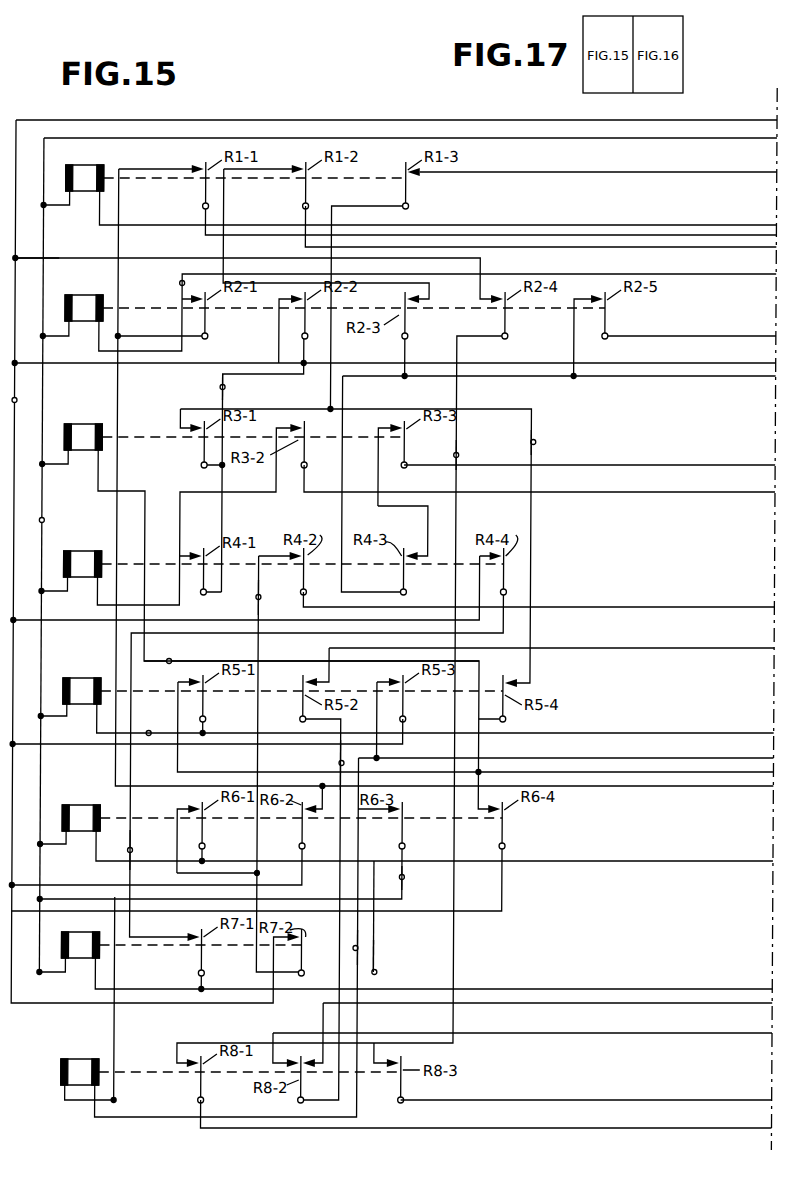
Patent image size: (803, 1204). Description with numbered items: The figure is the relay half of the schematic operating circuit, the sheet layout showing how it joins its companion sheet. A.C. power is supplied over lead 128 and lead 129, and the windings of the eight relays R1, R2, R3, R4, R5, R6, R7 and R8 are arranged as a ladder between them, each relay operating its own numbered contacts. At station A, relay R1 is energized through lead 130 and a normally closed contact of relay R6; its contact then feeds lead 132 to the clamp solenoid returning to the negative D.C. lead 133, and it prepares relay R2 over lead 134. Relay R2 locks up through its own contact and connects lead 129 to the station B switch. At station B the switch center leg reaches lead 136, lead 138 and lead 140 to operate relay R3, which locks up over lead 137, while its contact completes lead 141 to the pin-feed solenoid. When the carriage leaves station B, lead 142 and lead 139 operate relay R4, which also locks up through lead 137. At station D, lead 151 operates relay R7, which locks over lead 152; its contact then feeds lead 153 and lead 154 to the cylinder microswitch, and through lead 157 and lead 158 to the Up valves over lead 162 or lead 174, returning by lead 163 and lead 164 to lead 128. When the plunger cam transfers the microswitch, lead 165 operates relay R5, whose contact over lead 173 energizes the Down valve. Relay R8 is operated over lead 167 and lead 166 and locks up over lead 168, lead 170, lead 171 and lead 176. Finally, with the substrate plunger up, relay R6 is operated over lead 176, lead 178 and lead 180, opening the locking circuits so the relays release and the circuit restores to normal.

The A.C. lead 128 is at (560, 139).
The A.C. lead 129 is at (538, 120).
The lead 130 is at (628, 786).
The lead 132 is at (565, 248).
The negative D.C. lead 133 is at (720, 376).
The lead 134 is at (700, 275).
The lead 136 is at (690, 172).
The lead 137 is at (224, 387).
The lead 138 is at (535, 442).
The lead 139 is at (625, 493).
The lead 140 is at (172, 661).
The lead 141 is at (643, 465).
The lead 142 is at (643, 363).
The lead 151 is at (543, 989).
The lead 152 is at (134, 850).
The lead 153 is at (261, 597).
The lead 154 is at (585, 607).
The lead 157 is at (655, 648).
The lead 158 is at (345, 763).
The lead 162 is at (667, 1003).
The lead 163 is at (662, 861).
The lead 164 is at (406, 877).
The lead 165 is at (152, 733).
The lead 166 is at (360, 948).
The lead 167 is at (88, 744).
The lead 168 is at (85, 258).
The lead 170 is at (458, 455).
The lead 171 is at (585, 1128).
The lead 173 is at (710, 772).
The lead 174 is at (593, 1033).
The lead 176 is at (600, 759).
The lead 178 is at (647, 1102).
The lead 180 is at (379, 972).
The relay R1 is at (85, 168).
The relay R2 is at (84, 298).
The relay R3 is at (83, 427).
The relay R4 is at (83, 554).
The relay R5 is at (82, 681).
The relay R6 is at (81, 808).
The relay R7 is at (80, 935).
The relay R8 is at (80, 1062).